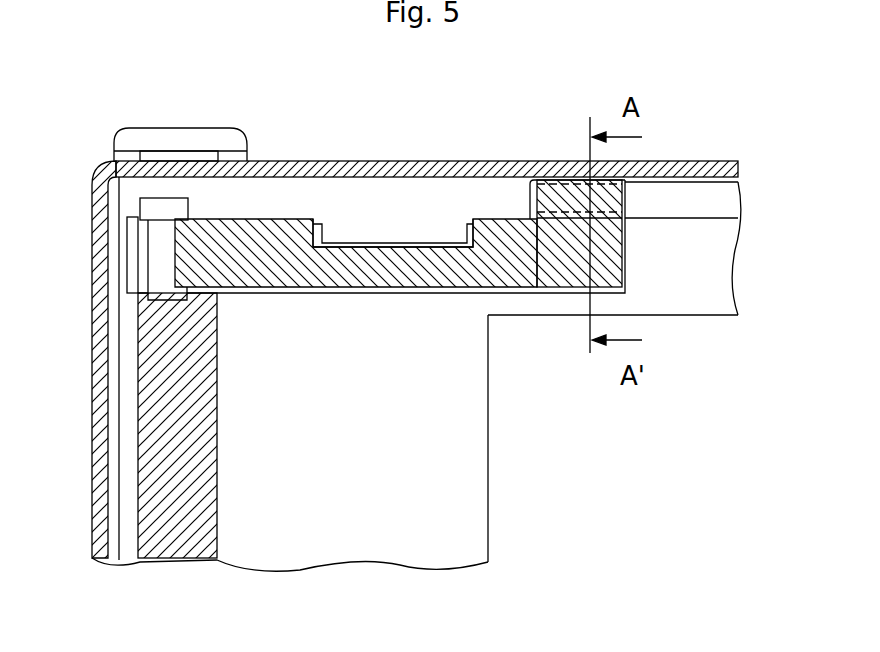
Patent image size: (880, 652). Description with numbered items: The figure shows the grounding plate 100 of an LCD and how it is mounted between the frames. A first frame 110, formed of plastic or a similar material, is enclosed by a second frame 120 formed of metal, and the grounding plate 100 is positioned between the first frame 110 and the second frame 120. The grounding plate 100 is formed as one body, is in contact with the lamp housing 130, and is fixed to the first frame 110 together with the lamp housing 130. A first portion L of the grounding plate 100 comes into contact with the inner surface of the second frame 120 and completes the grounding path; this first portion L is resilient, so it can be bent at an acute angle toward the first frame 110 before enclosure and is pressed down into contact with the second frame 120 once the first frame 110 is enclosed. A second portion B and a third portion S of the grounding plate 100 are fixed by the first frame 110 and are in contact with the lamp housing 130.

The grounding plate 100 is at (280, 230).
The first frame 110 is at (519, 190).
The second frame 120 is at (413, 163).
The lamp housing 130 is at (167, 545).
The third portion S is at (427, 241).
The first portion L is at (637, 163).
The second portion B is at (187, 230).